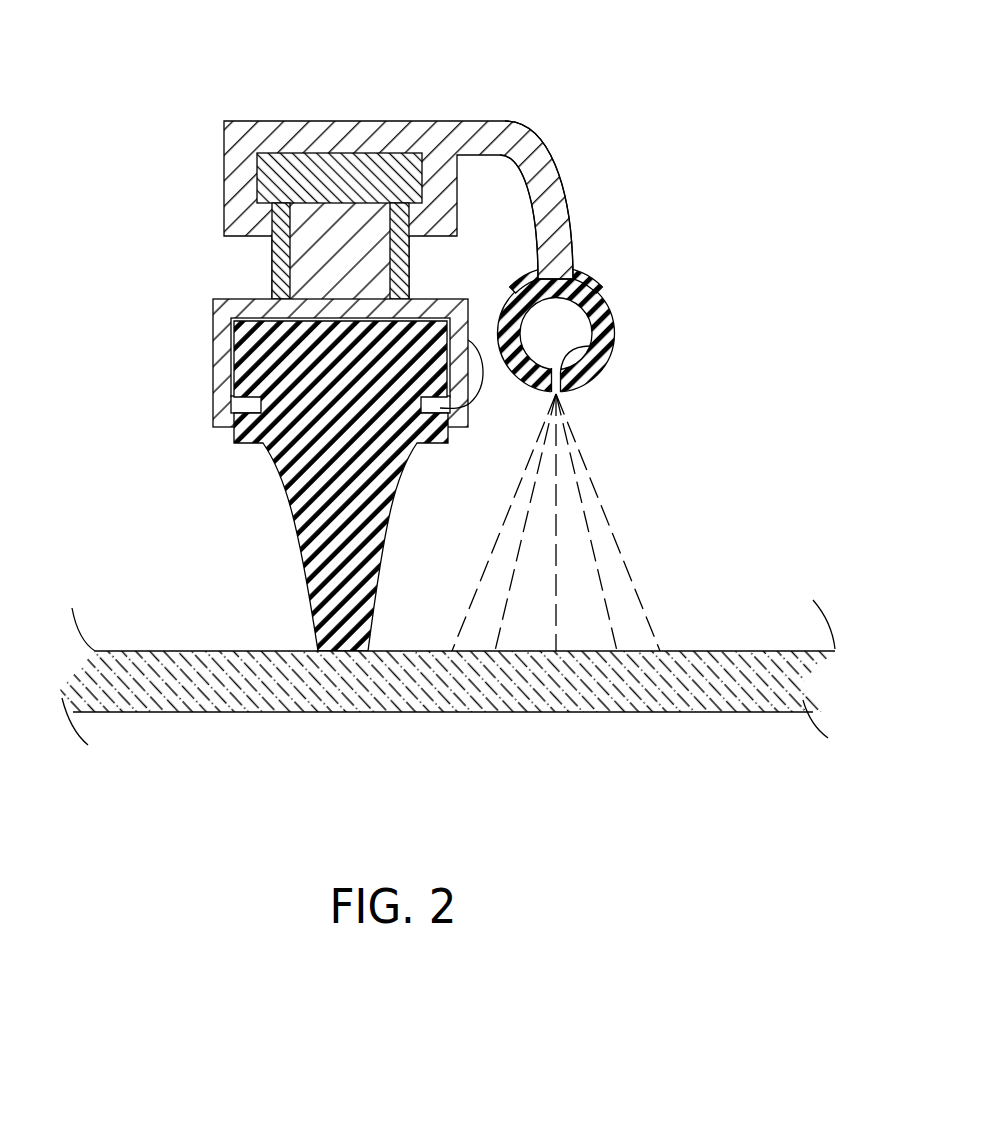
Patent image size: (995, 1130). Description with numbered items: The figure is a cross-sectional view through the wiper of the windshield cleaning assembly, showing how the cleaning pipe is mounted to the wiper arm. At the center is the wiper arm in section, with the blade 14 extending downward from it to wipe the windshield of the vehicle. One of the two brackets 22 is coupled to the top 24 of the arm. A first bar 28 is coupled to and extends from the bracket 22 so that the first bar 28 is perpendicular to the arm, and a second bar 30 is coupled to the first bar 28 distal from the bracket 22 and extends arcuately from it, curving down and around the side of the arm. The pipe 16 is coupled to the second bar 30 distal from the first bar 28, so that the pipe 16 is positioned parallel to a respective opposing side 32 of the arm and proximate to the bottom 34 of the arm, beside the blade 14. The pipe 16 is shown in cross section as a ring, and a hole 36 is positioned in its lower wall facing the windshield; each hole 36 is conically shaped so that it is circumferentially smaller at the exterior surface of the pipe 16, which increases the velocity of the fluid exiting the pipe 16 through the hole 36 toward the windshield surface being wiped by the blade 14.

The blade 14 is at (320, 500).
The pipe 16 is at (613, 317).
The bracket 22 is at (405, 122).
The top of the arm 24 is at (337, 153).
The first bar 28 is at (487, 122).
The second bar 30 is at (542, 203).
The opposing side of the arm 32 is at (440, 408).
The bottom of the arm 34 is at (222, 428).
The hole 36 is at (590, 346).